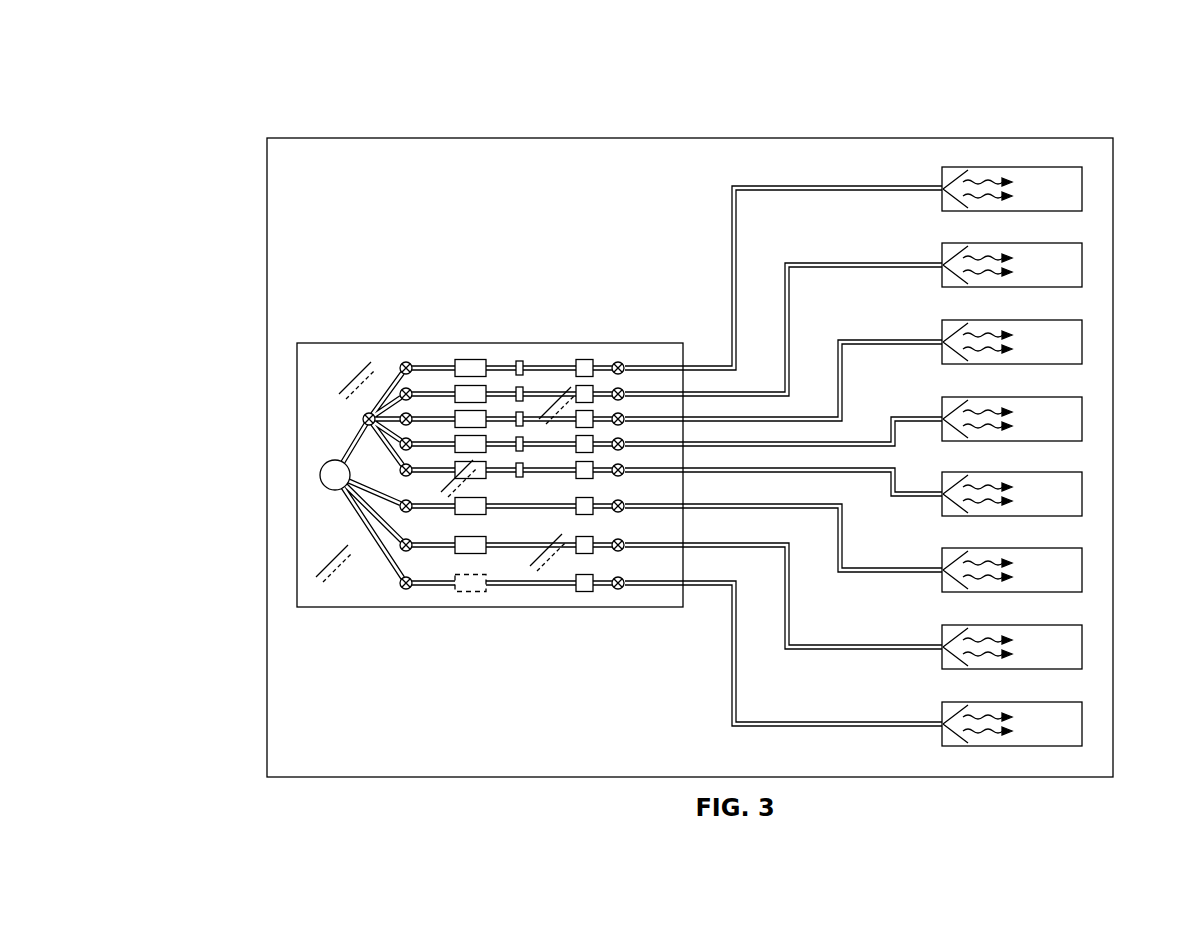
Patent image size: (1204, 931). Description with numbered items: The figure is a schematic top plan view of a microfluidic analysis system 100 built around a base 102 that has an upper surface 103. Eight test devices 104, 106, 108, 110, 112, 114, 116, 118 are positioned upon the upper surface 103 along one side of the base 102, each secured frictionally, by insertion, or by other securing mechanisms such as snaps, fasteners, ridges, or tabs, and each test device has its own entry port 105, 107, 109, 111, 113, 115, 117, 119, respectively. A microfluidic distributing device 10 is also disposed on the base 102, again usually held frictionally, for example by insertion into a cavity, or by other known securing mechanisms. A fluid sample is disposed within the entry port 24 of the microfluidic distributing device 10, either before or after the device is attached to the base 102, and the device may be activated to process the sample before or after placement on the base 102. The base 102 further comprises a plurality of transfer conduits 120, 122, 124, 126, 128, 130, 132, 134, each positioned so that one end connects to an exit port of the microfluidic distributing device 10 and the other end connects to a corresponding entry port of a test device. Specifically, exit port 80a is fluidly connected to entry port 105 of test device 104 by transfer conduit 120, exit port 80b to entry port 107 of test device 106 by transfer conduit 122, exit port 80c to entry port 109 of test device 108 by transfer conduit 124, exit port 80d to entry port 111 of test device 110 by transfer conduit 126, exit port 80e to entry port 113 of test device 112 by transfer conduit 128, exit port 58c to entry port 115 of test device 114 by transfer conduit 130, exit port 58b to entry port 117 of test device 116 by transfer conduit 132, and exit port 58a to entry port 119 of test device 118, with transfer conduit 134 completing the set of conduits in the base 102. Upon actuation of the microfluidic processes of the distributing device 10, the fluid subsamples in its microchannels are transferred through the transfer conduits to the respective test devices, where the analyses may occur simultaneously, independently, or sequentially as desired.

The microfluidic analysis system 100 is at (243, 106).
The base 102 is at (323, 137).
The upper surface 103 is at (386, 150).
The microfluidic distributing device 10 is at (490, 462).
The entry port 24 is at (333, 461).
The exit port 58a is at (683, 470).
The exit port 58b is at (683, 506).
The exit port 58c is at (683, 545).
The exit port 80a is at (683, 370).
The exit port 80b is at (683, 395).
The exit port 80c is at (683, 420).
The exit port 80d is at (683, 445).
The exit port 80e is at (576, 591).
The test device 104 is at (1020, 184).
The entry port 105 is at (940, 187).
The test device 106 is at (1020, 260).
The entry port 107 is at (940, 263).
The test device 108 is at (1020, 337).
The entry port 109 is at (940, 340).
The test device 110 is at (1020, 413).
The entry port 111 is at (940, 417).
The test device 112 is at (1019, 492).
The entry port 113 is at (940, 496).
The test device 114 is at (1019, 569).
The entry port 115 is at (940, 572).
The test device 116 is at (1019, 645).
The entry port 117 is at (940, 649).
The test device 118 is at (1019, 722).
The entry port 119 is at (940, 726).
The transfer conduit 120 is at (845, 186).
The transfer conduit 122 is at (845, 263).
The transfer conduit 124 is at (845, 340).
The transfer conduit 126 is at (887, 417).
The transfer conduit 128 is at (887, 497).
The transfer conduit 130 is at (848, 572).
The transfer conduit 132 is at (848, 650).
The transfer conduit 134 is at (848, 726).